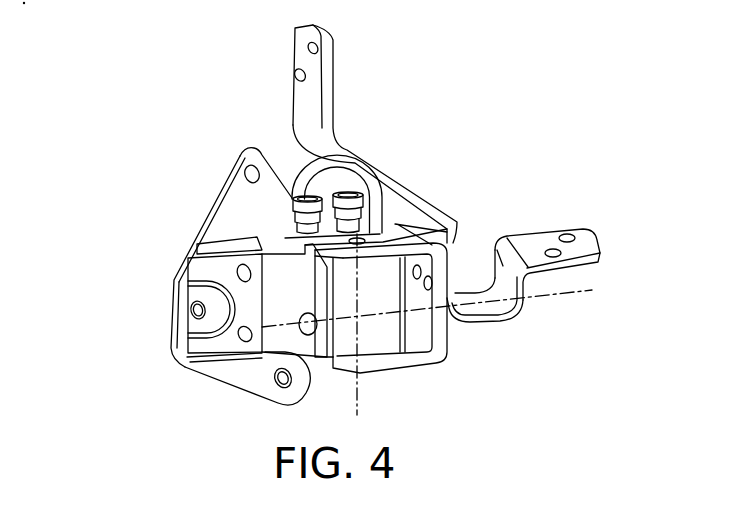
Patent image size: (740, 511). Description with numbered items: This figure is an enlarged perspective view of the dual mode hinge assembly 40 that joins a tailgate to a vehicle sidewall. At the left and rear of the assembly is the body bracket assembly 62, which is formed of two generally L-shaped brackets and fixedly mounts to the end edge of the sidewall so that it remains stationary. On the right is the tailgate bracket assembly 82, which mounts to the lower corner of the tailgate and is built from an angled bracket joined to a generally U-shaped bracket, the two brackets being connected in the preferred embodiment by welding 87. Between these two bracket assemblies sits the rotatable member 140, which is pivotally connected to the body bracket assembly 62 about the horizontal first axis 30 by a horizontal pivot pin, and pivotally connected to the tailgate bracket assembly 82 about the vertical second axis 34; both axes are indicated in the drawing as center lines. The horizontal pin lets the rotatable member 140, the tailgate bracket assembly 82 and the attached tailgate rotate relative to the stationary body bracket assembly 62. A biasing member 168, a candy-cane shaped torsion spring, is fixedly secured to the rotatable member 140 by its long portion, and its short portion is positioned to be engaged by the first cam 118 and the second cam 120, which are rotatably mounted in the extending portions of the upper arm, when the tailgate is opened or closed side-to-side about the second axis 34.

The first axis 30 is at (557, 297).
The second axis 34 is at (358, 395).
The dual mode hinge assembly 40 is at (137, 337).
The body bracket assembly 62 is at (211, 183).
The tailgate bracket assembly 82 is at (493, 330).
The welding 87 is at (210, 247).
The first cam 118 is at (281, 211).
The second cam 120 is at (368, 201).
The rotatable member 140 is at (392, 338).
The biasing member 168 is at (304, 162).